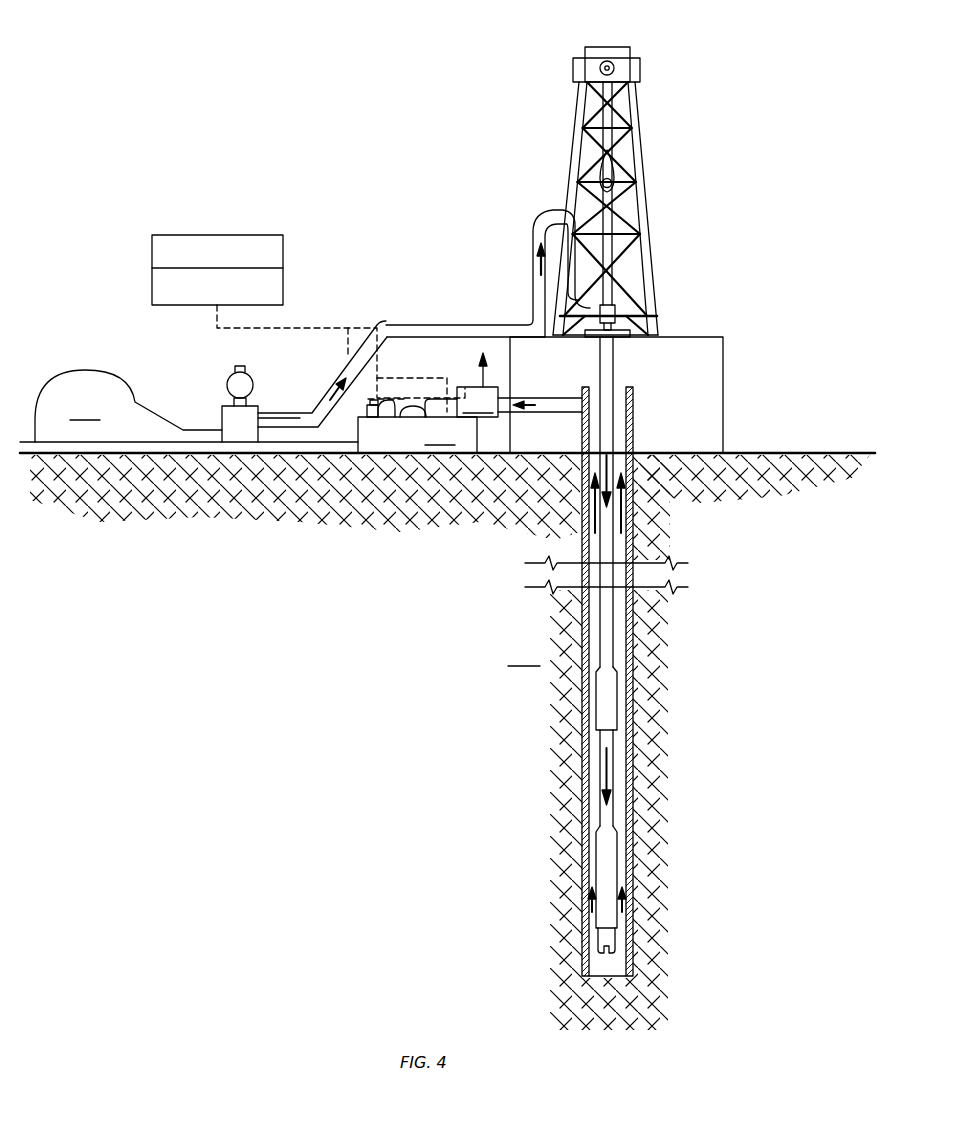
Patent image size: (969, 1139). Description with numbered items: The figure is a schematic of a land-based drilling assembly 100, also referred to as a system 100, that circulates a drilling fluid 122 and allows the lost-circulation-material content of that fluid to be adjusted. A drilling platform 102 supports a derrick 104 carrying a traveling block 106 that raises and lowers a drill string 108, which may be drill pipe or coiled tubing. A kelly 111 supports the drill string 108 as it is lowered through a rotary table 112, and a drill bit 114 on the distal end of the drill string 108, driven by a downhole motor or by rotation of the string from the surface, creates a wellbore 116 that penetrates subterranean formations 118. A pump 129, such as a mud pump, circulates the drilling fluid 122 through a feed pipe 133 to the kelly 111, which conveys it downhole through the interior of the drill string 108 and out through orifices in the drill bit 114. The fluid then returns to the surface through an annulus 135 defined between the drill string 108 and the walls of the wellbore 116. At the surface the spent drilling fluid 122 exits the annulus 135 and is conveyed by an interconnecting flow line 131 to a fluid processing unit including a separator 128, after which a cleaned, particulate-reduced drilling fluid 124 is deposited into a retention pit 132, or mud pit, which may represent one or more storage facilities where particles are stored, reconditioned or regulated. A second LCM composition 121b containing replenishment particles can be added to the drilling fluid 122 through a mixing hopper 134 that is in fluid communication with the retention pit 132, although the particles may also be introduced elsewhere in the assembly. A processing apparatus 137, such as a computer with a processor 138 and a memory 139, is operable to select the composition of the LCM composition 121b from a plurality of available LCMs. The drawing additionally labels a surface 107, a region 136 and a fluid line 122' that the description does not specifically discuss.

The drilling assembly 100 is at (380, 37).
The drilling platform 102 is at (725, 357).
The derrick 104 is at (641, 140).
The traveling block 106 is at (625, 175).
The surface 107 is at (797, 453).
The drill string 108 is at (633, 543).
The kelly 111 is at (640, 252).
The rotary table 112 is at (641, 312).
The drill bit 114 is at (622, 943).
The wellbore 116 is at (622, 630).
The subterranean formations 118 is at (350, 742).
The LCM composition 121b is at (362, 418).
The drilling fluid 122 is at (605, 647).
The treated drilling fluid line 122' is at (322, 374).
The particulate-reduced drilling fluid 124 is at (395, 425).
The separator 128 is at (477, 402).
The pump 129 is at (128, 406).
The interconnecting flow line 131 is at (548, 413).
The retention pit 132 is at (417, 435).
The feed pipe 133 is at (447, 325).
The mixing hopper 134 is at (405, 400).
The annulus 135 is at (622, 775).
The wellbore formation 136 is at (792, 518).
The processing apparatus 137 is at (200, 235).
The processor 138 is at (211, 289).
The memory 139 is at (213, 255).